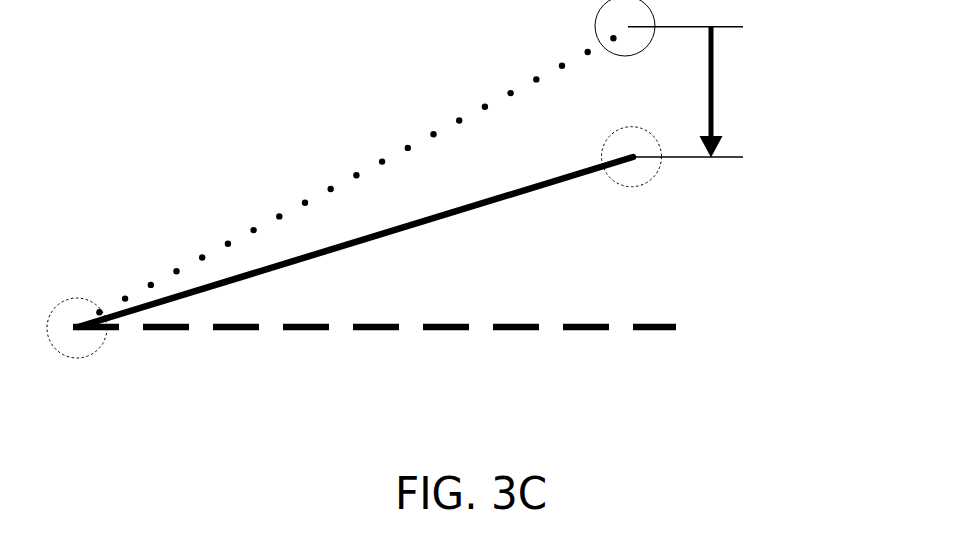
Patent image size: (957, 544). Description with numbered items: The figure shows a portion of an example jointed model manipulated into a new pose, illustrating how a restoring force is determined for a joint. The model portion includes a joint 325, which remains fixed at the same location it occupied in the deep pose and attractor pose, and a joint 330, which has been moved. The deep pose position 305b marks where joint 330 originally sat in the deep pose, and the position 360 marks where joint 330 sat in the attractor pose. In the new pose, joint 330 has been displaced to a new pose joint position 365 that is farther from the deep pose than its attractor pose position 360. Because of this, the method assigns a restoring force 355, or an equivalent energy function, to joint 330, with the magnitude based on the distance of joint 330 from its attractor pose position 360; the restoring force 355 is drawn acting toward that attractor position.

The new pose joint position 365 is at (607, 27).
The joint 330 is at (625, 57).
The restoring force 355 is at (712, 100).
The position in the attractor pose 360 is at (618, 187).
The deep pose position 305b is at (662, 323).
The joint 325 is at (92, 358).